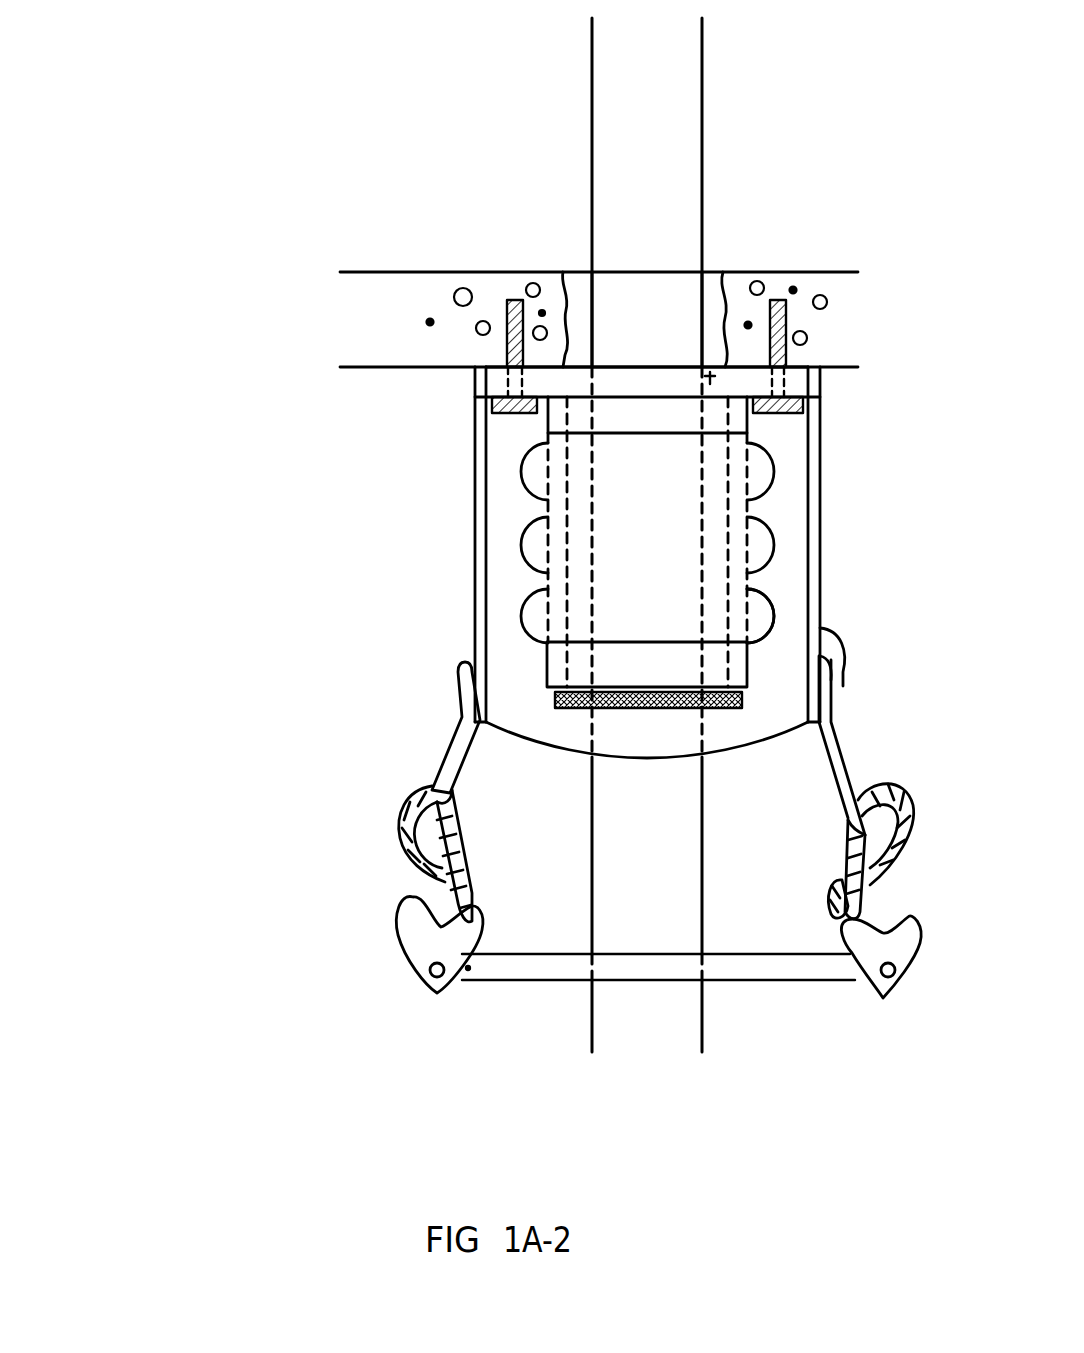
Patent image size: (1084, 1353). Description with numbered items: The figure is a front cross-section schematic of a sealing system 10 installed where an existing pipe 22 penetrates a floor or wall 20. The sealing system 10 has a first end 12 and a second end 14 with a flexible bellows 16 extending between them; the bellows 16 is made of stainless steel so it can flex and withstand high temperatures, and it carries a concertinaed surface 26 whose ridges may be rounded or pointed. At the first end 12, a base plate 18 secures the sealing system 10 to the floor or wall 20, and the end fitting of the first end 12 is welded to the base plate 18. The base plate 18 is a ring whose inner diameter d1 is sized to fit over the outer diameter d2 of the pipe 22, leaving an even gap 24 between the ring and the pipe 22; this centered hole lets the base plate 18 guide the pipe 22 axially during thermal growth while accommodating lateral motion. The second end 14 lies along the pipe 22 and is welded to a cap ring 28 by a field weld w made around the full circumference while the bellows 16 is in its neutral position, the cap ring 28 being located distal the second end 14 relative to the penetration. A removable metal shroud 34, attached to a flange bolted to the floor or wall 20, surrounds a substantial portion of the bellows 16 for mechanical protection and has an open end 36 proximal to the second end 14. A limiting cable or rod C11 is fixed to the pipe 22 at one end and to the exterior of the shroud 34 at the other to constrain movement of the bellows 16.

The sealing system 10 is at (145, 391).
The first end 12 is at (785, 418).
The second end 14 is at (515, 672).
The flexible bellows 16 is at (775, 540).
The base plate 18 is at (818, 384).
The floor or wall 20 is at (340, 315).
The pipe 22 is at (699, 1022).
The gap 24 is at (710, 382).
The concertinaed surface 26 is at (770, 613).
The cap ring 28 is at (742, 694).
The removable shroud 34 is at (843, 686).
The open end 36 is at (545, 772).
The cable or rod C11 is at (395, 865).
The field weld w is at (556, 717).
The inner diameter d1 is at (580, 376).
The outer diameter d2 is at (720, 292).